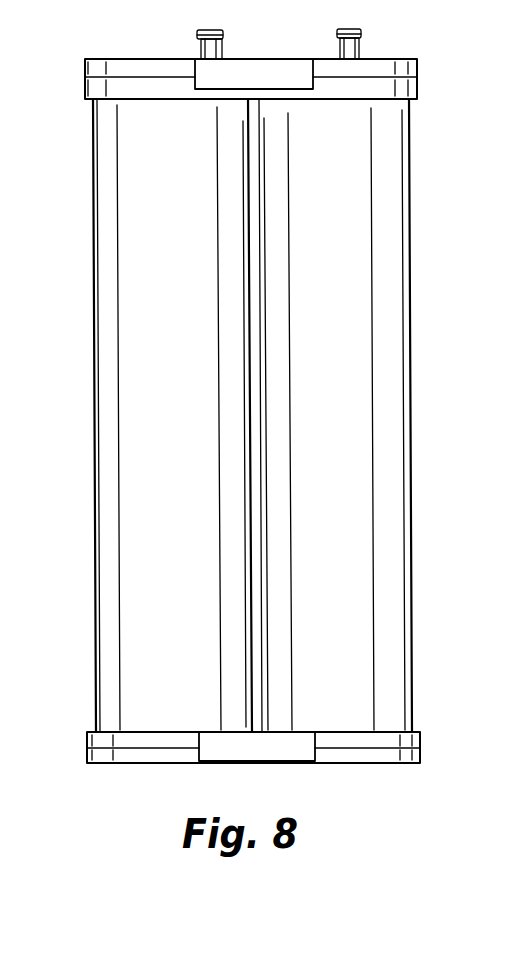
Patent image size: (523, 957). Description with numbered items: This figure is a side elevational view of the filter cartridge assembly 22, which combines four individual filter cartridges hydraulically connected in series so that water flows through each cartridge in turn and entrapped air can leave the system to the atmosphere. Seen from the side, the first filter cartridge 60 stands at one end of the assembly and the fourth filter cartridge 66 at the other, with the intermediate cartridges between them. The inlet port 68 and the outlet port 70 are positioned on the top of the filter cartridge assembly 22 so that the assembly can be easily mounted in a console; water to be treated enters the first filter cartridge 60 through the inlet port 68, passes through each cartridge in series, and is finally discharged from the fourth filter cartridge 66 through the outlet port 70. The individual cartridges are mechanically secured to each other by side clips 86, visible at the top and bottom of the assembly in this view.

The filter cartridge assembly 22 is at (424, 291).
The first filter cartridge 60 is at (86, 365).
The fourth filter cartridge 66 is at (418, 520).
The inlet port 68 is at (224, 52).
The outlet port 70 is at (362, 50).
The side clips 86 is at (290, 776).